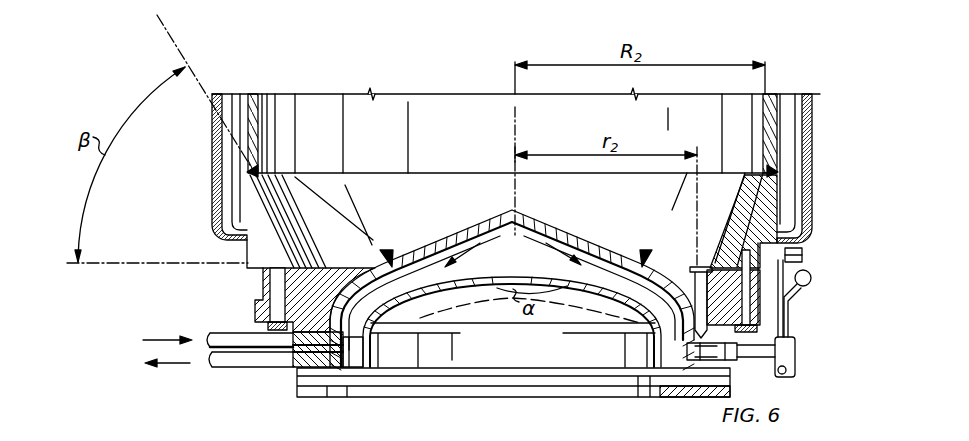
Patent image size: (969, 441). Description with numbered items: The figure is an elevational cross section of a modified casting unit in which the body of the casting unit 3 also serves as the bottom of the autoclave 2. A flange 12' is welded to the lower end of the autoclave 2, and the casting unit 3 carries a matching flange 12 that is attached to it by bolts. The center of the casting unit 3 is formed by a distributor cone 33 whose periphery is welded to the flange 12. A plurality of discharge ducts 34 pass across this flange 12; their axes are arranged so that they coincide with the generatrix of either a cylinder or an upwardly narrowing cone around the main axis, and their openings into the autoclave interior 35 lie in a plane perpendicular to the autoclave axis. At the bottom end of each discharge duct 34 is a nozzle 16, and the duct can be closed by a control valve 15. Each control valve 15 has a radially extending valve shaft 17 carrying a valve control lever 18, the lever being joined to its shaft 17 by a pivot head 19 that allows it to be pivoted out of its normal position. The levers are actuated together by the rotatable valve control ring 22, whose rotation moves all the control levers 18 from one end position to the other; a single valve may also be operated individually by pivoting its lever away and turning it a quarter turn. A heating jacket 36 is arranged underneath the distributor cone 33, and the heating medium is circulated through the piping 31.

The autoclave 2 is at (200, 199).
The casting unit 3 is at (232, 294).
The piping 31 is at (212, 365).
The autoclave interior 35 is at (531, 142).
The heating jacket 36 is at (539, 260).
The distributor cone 33 is at (612, 256).
The discharge ducts 34 is at (700, 282).
The flange 12 is at (512, 228).
The flange 12' is at (545, 163).
The valve control ring 22 is at (787, 300).
The valve control lever 18 is at (788, 317).
The valve shaft 17 is at (767, 348).
The pivot head 19 is at (787, 367).
The control valve 15 is at (737, 363).
The nozzle 16 is at (697, 393).